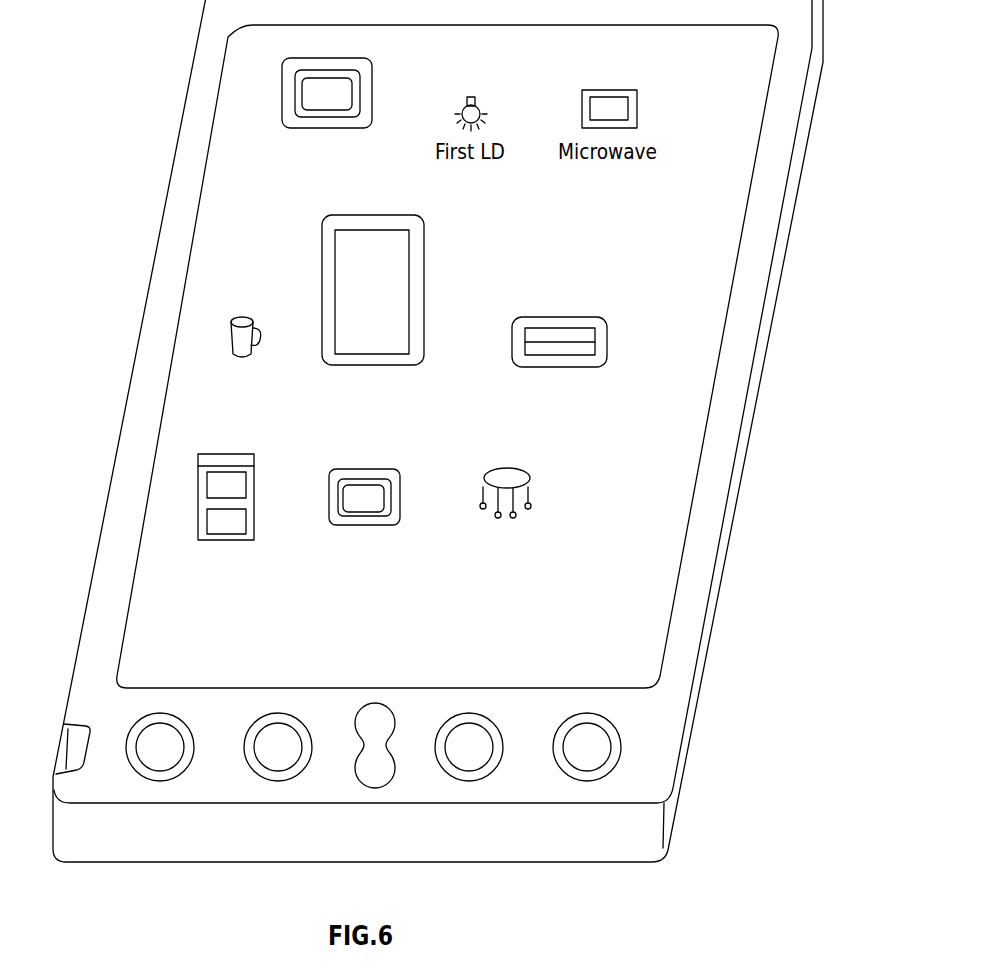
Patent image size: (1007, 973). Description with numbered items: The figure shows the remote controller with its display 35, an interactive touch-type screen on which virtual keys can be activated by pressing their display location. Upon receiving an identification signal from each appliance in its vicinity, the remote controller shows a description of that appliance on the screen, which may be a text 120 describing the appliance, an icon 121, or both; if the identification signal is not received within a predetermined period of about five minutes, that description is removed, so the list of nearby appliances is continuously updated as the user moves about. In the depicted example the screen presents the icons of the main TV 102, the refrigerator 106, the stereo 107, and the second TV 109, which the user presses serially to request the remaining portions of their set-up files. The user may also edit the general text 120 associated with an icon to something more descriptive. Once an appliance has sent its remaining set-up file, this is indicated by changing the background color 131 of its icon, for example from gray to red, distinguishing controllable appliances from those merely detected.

The display 35 is at (643, 583).
The main TV icon 102 is at (320, 97).
The refrigerator icon 106 is at (355, 265).
The stereo icon 107 is at (583, 333).
The second TV icon 109 is at (353, 503).
The text 120 is at (285, 147).
The icon 121 is at (320, 298).
The background color 131 is at (290, 68).